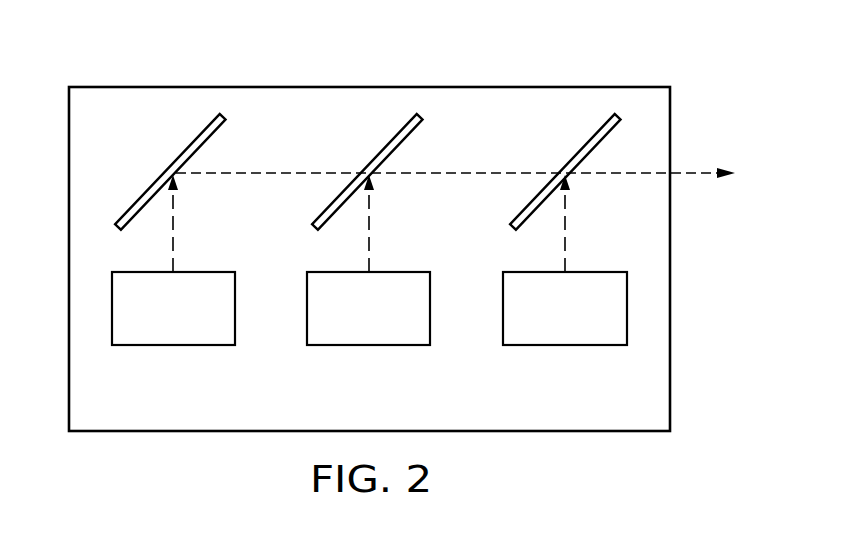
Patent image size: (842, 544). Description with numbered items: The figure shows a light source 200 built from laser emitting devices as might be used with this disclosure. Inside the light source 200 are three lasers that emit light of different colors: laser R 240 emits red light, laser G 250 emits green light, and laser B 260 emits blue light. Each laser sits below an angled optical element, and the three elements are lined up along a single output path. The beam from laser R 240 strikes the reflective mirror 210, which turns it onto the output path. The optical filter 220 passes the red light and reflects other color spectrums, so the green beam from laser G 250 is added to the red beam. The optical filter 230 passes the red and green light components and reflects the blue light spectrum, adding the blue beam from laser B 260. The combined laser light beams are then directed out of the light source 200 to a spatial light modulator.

The light source 200 is at (492, 86).
The reflective mirror 210 is at (187, 150).
The optical filter 220 is at (384, 150).
The optical filter 230 is at (581, 150).
The laser R 240 is at (148, 346).
The laser G 250 is at (393, 346).
The laser B 260 is at (587, 346).